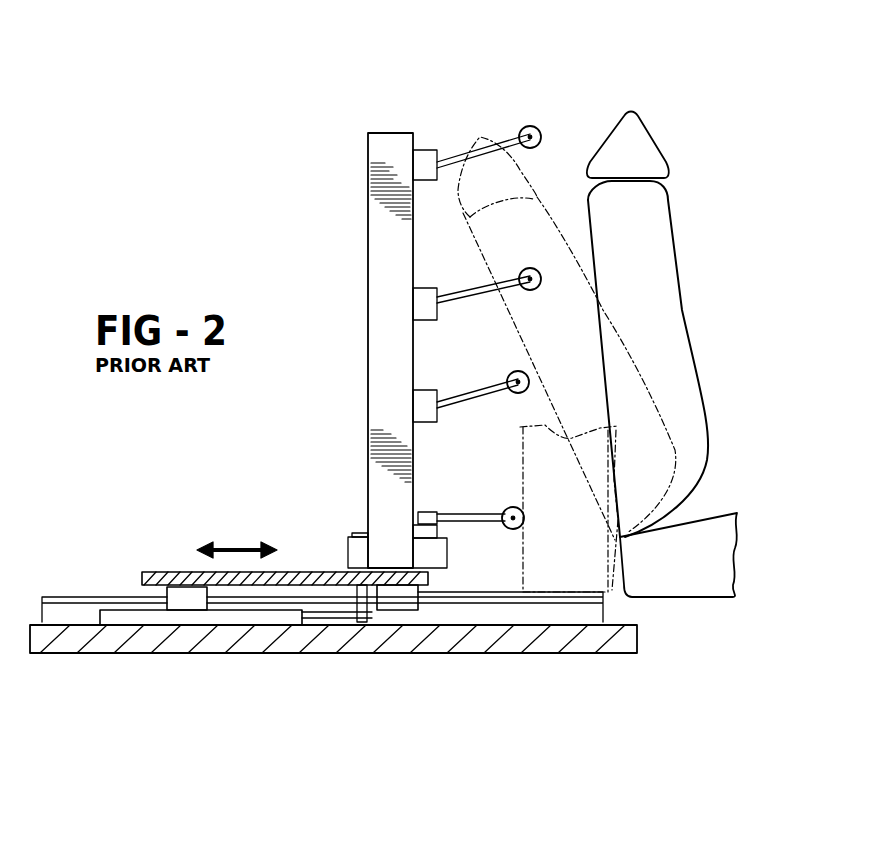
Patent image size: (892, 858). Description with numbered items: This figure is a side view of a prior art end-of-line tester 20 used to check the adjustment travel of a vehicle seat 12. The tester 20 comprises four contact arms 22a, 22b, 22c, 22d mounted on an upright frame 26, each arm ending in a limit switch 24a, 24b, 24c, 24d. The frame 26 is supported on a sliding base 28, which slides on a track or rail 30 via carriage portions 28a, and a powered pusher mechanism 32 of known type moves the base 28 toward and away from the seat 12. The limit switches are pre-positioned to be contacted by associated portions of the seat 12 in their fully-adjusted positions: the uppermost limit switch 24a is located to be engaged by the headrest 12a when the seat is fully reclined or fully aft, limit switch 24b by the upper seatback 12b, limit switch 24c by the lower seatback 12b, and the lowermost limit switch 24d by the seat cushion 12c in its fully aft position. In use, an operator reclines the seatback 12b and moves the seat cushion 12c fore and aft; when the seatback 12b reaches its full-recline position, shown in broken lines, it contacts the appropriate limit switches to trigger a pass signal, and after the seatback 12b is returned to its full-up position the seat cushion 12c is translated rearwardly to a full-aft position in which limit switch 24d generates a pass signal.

The end-of-line tester 20 is at (538, 122).
The seat 12 is at (641, 388).
The headrest 12a is at (650, 158).
The seatback 12b is at (587, 220).
The seat cushion 12c is at (620, 583).
The contact arm 22a is at (458, 150).
The contact arm 22b is at (462, 295).
The contact arm 22c is at (468, 392).
The contact arm 22d is at (462, 513).
The limit switch 24a is at (546, 134).
The limit switch 24b is at (545, 280).
The limit switch 24c is at (527, 393).
The limit switch 24d is at (510, 530).
The frame 26 is at (380, 483).
The sliding base 28 is at (288, 572).
The carriage portion 28a is at (183, 592).
The rail 30 is at (105, 597).
The pusher mechanism 32 is at (170, 618).